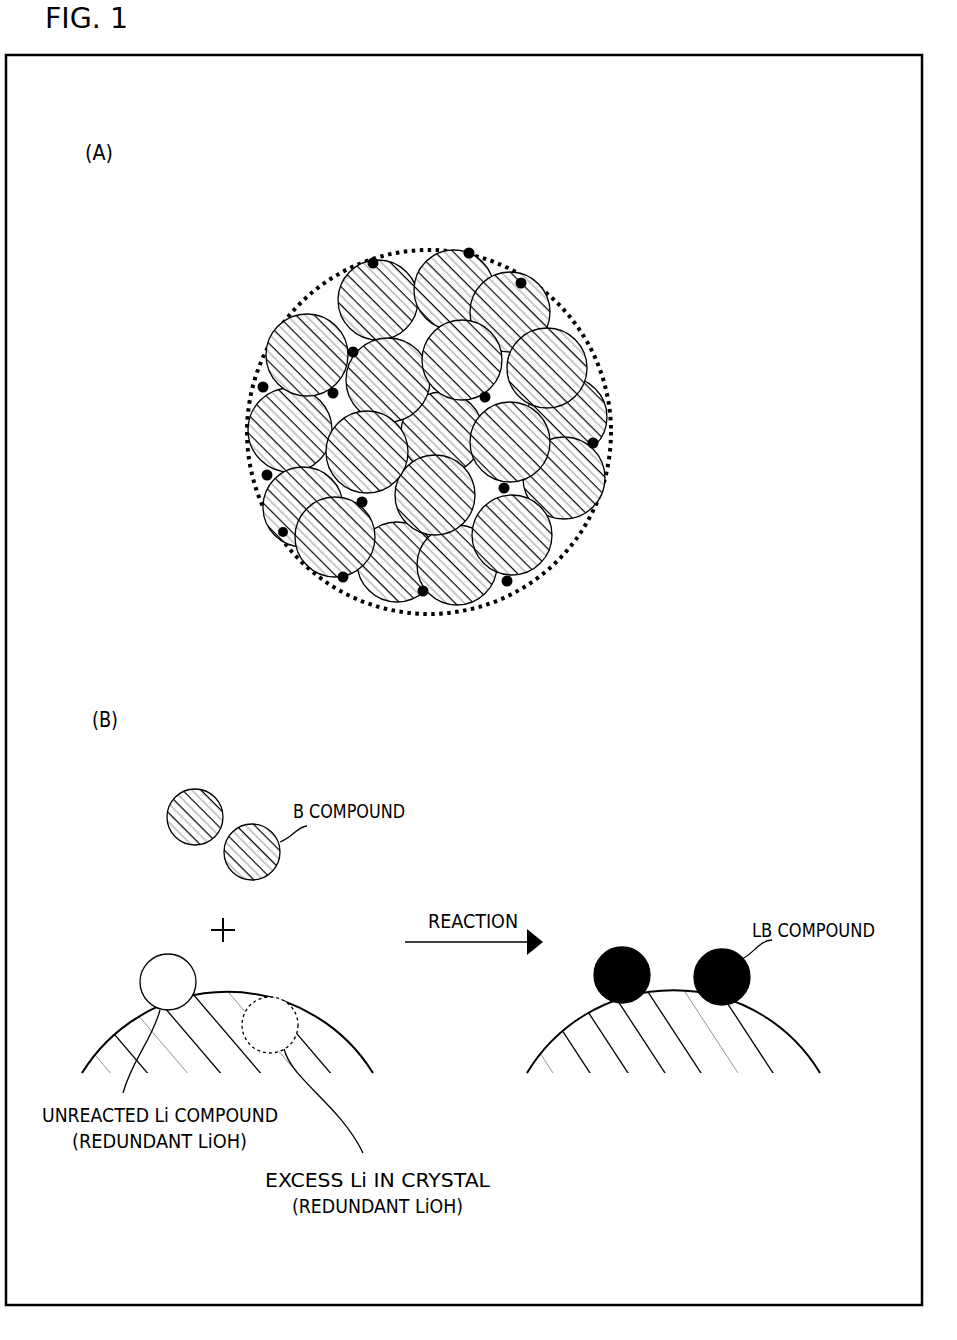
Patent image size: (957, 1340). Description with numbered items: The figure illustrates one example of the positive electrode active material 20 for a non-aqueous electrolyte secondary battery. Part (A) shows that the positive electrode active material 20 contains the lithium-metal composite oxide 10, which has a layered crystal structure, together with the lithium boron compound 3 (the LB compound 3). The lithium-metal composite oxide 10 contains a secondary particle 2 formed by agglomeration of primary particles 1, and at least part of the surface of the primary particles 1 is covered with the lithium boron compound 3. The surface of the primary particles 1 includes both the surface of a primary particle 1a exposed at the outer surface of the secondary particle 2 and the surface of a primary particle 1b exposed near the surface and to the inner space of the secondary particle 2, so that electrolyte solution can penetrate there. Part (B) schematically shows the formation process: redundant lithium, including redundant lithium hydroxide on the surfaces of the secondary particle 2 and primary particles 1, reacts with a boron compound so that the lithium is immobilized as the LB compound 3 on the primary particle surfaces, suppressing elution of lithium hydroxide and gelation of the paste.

The positive electrode active material 20 is at (195, 211).
The secondary particle 2 is at (455, 432).
The lithium-metal composite oxide 10 is at (567, 312).
The primary particle 1 is at (333, 1028).
The primary particle exposed to the outer surface 1a is at (588, 350).
The primary particle exposed to the vicinity of the surface and inner space 1b is at (333, 318).
The lithium boron compound 3 is at (598, 445).